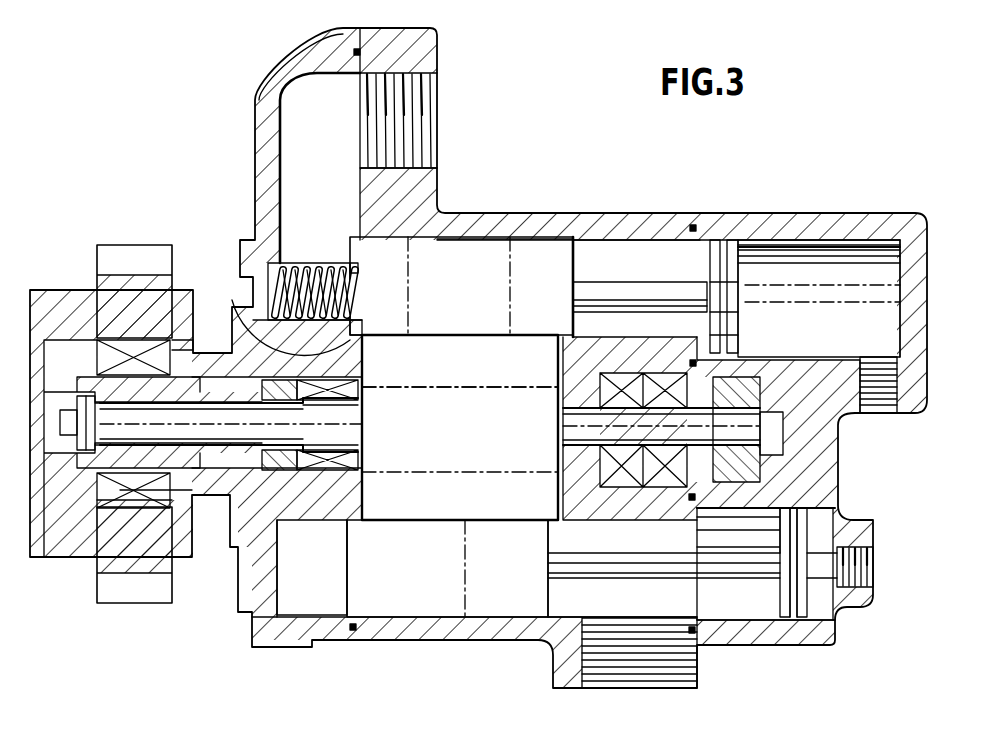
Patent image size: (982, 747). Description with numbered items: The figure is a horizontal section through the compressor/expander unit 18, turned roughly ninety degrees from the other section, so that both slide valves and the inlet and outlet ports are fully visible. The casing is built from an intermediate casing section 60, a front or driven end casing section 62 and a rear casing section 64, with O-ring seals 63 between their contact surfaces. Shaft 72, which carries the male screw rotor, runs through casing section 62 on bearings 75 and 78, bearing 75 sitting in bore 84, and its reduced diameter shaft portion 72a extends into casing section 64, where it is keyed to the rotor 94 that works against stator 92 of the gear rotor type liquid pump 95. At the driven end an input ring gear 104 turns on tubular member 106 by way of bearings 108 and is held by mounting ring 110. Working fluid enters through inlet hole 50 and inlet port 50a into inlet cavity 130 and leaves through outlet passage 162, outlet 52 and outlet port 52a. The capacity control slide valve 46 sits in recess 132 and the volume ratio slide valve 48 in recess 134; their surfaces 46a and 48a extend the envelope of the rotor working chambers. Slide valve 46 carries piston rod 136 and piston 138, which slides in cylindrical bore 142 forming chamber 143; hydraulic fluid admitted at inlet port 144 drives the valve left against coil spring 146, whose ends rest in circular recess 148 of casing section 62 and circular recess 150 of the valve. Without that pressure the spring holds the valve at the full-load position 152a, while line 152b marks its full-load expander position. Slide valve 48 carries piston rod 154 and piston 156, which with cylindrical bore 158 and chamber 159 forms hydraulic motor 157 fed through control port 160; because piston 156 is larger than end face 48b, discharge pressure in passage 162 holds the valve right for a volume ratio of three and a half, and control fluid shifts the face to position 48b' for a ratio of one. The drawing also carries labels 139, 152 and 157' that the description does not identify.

The unit 18 is at (480, 184).
The capacity control slide valve 46 is at (500, 237).
The surface of capacity slide valve 46a is at (470, 335).
The volume ratio slide valve 48 is at (446, 600).
The surface of volume ratio slide valve 48a is at (454, 518).
The end face of volume ratio slide valve 48b is at (568, 568).
The dotted line position of end face 48b' is at (484, 568).
The inlet hole 50 is at (420, 140).
The inlet port 50a is at (365, 345).
The outlet 52 is at (640, 676).
The outlet port 52a is at (565, 526).
The intermediate casing section 60 is at (555, 226).
The front casing section 62 is at (262, 220).
The O-ring seals 63 is at (358, 48).
The rear casing section 64 is at (796, 226).
The shaft 72 is at (247, 426).
The reduced diameter shaft portion 72a is at (639, 433).
The bearing 75 is at (342, 392).
The bearing 78 is at (572, 476).
The bore 84 is at (362, 380).
The pump stator 92 is at (790, 482).
The pump rotor 94 is at (790, 380).
The liquid pump 95 is at (755, 376).
The input ring gear 104 is at (97, 280).
The tubular member 106 is at (240, 526).
The bearings 108 is at (162, 490).
The mounting ring 110 is at (196, 302).
The inlet cavity 130 is at (333, 193).
The recess 132 is at (588, 226).
The recess 134 is at (384, 612).
The piston rod 136 is at (622, 287).
The piston 138 is at (738, 292).
The gap 139 is at (748, 314).
The cylindrical bore 142 is at (855, 250).
The chamber 143 is at (856, 313).
The hydraulic fluid inlet port 144 is at (880, 360).
The coil spring 146 is at (320, 265).
The circular recess 148 is at (244, 310).
The circular recess 150 is at (360, 272).
The seal 152 is at (358, 328).
The dotted line position 152a is at (513, 290).
The dot-dash line position 152b is at (413, 291).
The piston rod 154 is at (672, 582).
The piston 156 is at (830, 620).
The hydraulic motor 157 is at (825, 553).
The lock nut 157' is at (779, 598).
The cylindrical bore 158 is at (762, 640).
The chamber 159 is at (743, 604).
The control port 160 is at (855, 568).
The outlet passage 162 is at (562, 648).